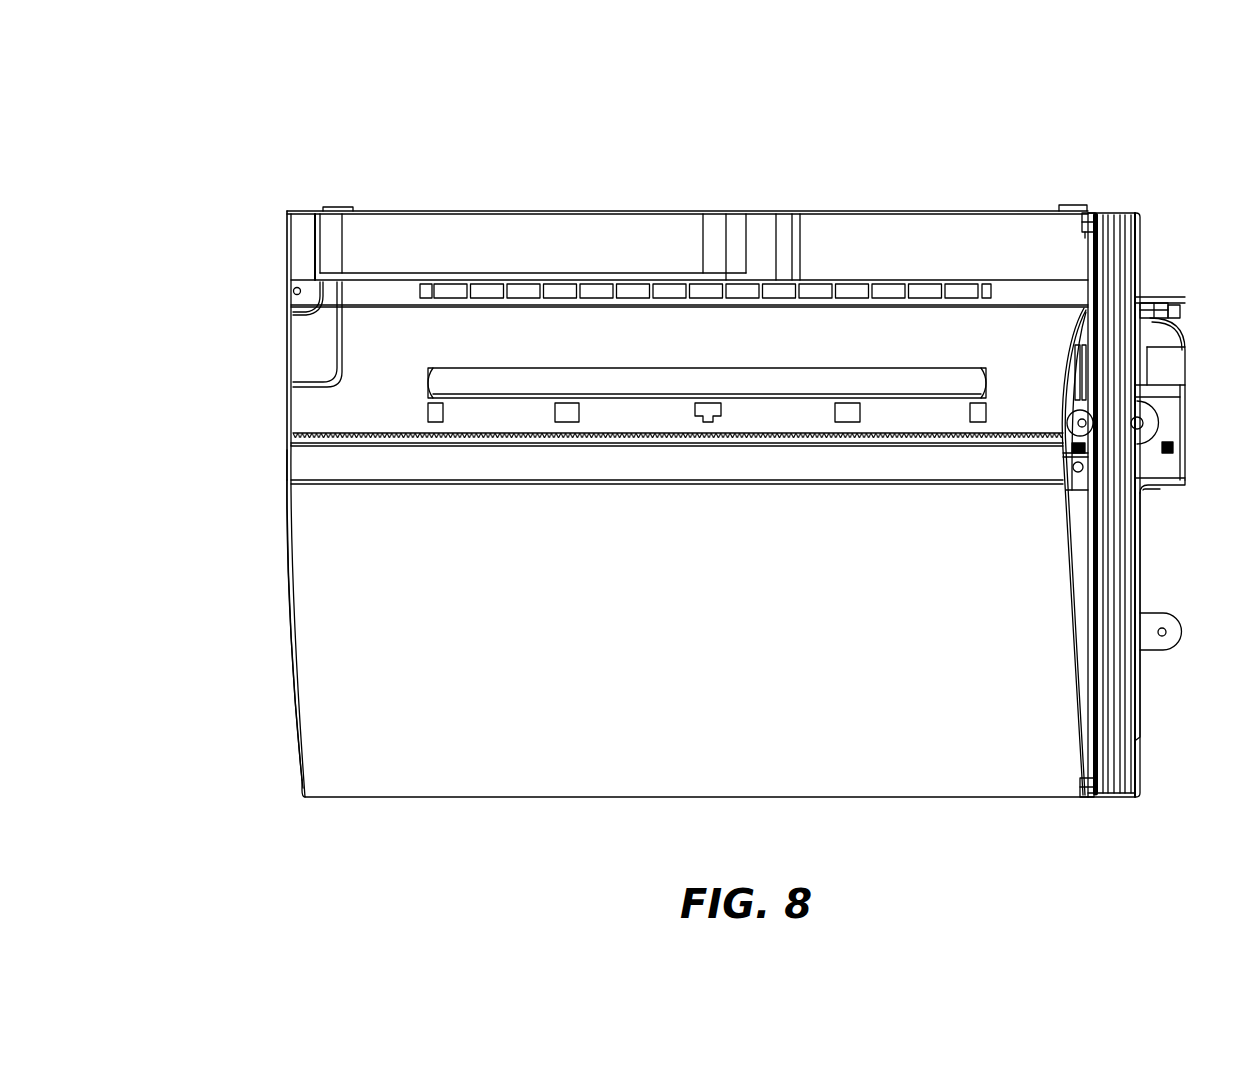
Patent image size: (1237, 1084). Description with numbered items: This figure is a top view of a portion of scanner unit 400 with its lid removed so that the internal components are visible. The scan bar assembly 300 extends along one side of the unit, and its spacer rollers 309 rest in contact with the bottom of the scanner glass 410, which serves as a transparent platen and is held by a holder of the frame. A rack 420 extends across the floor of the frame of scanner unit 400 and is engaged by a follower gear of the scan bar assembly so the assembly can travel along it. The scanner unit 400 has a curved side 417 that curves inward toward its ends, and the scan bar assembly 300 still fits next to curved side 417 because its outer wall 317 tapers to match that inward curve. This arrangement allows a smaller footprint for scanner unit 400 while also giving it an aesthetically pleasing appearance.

The scanner unit 400 is at (749, 183).
The scanner glass 410 is at (338, 656).
The curved side 417 is at (283, 555).
The rack 420 is at (332, 435).
The scan bar assembly 300 is at (1041, 578).
The spacer rollers 309 is at (1082, 220).
The outer wall 317 is at (1065, 517).